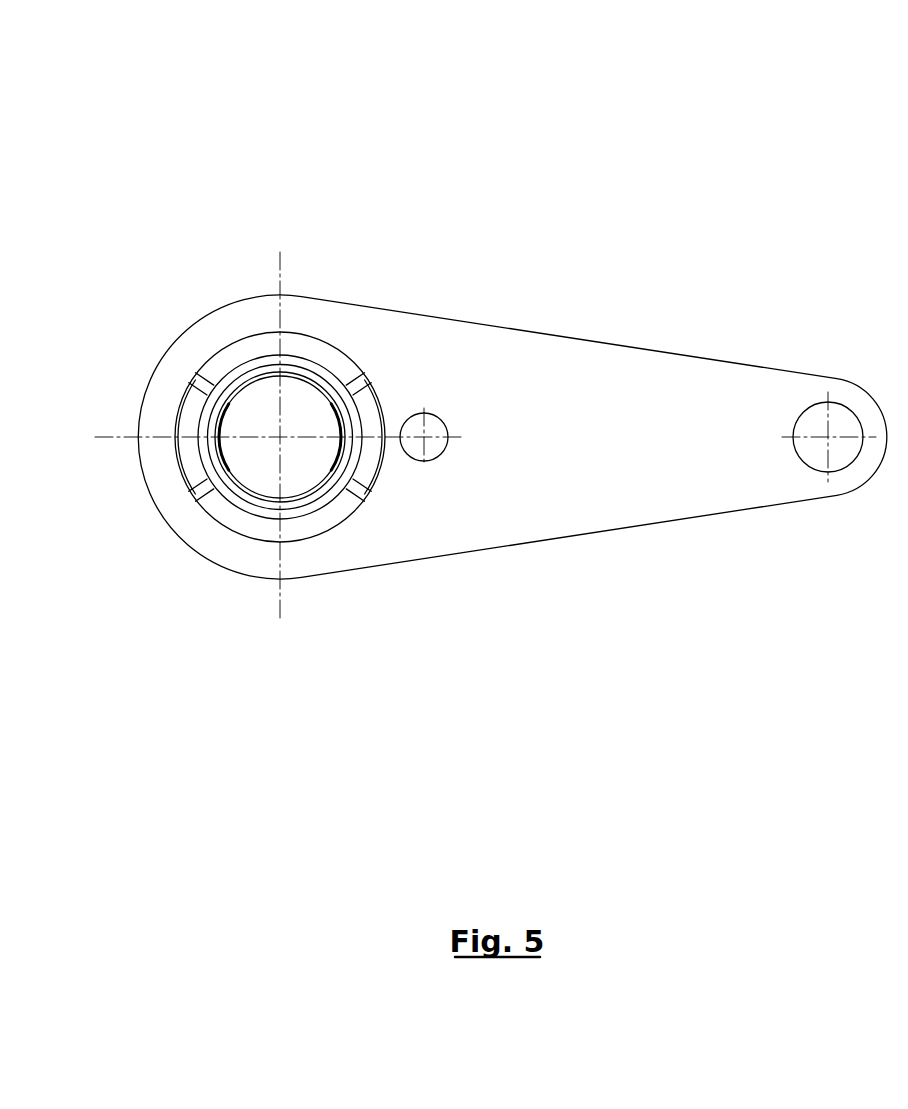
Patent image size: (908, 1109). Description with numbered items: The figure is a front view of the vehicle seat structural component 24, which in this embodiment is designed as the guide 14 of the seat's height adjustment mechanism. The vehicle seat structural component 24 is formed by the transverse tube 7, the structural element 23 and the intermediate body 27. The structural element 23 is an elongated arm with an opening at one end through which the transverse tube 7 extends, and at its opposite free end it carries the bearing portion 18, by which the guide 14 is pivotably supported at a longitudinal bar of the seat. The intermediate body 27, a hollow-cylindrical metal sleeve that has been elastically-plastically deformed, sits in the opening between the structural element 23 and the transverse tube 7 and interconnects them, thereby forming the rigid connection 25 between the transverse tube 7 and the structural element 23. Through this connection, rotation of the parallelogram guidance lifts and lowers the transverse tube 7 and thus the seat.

The vehicle seat structural component 24 is at (486, 343).
The guide 14 is at (491, 436).
The structural element 23 is at (662, 480).
The bearing portion 18 is at (810, 456).
The intermediate body 27 is at (313, 350).
The rigid connection 25 is at (210, 539).
The transverse tube 7 is at (307, 373).